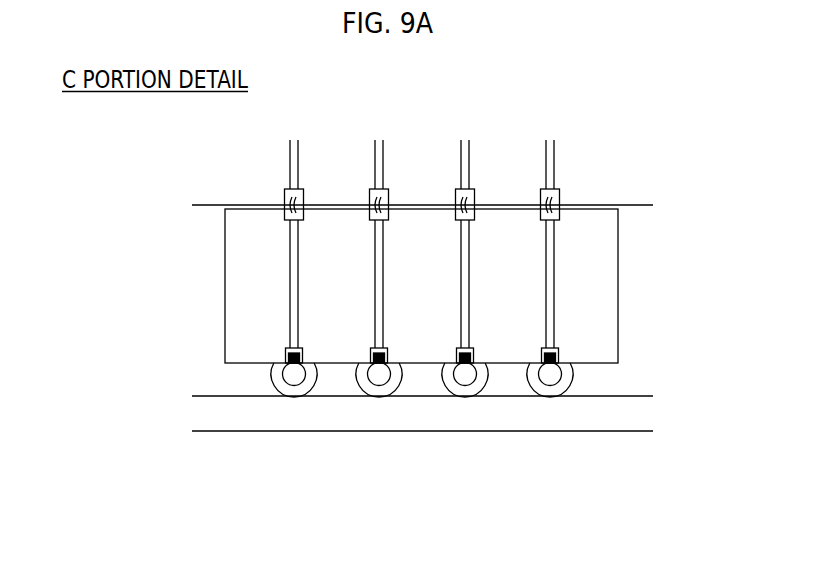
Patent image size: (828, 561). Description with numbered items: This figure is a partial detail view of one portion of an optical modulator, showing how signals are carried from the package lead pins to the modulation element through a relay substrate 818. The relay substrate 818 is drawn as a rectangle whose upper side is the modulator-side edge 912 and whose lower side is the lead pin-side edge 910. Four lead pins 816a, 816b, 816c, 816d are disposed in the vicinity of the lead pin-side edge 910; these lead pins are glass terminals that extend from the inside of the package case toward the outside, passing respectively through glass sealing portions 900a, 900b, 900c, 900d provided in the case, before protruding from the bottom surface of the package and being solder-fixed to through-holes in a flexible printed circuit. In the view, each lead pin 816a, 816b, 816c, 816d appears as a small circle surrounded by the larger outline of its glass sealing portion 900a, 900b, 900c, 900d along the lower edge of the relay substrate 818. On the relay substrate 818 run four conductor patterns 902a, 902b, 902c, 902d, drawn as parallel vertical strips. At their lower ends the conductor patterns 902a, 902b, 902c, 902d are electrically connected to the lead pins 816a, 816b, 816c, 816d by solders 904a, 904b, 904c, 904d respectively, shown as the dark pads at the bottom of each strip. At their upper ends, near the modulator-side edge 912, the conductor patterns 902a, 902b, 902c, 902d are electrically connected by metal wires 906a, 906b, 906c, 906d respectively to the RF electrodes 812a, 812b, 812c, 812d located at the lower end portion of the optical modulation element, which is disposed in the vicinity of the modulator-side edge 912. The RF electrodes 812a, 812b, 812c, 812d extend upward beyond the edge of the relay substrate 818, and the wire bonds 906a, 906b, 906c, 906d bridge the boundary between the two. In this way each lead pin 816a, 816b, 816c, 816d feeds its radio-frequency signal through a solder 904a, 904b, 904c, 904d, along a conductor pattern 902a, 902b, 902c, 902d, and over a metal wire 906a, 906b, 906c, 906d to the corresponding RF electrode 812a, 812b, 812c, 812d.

The RF electrode 812a is at (553, 150).
The RF electrode 812b is at (468, 147).
The RF electrode 812c is at (377, 153).
The RF electrode 812d is at (292, 153).
The metal wire 906a is at (557, 200).
The metal wire 906b is at (468, 200).
The metal wire 906c is at (377, 200).
The metal wire 906d is at (290, 200).
The conductor pattern 902a is at (547, 230).
The conductor pattern 902b is at (468, 233).
The conductor pattern 902c is at (380, 263).
The conductor pattern 902d is at (295, 297).
The solder 904a is at (558, 353).
The solder 904b is at (473, 355).
The solder 904c is at (379, 360).
The solder 904d is at (286, 354).
The glass sealing portion 900a is at (566, 390).
The glass sealing portion 900b is at (479, 392).
The glass sealing portion 900c is at (364, 392).
The glass sealing portion 900d is at (279, 392).
The lead pin 816a is at (553, 378).
The lead pin 816b is at (467, 378).
The lead pin 816c is at (381, 380).
The lead pin 816d is at (291, 377).
The relay substrate 818 is at (245, 323).
The lead pin-side edge 910 is at (602, 363).
The modulator-side edge 912 is at (598, 205).